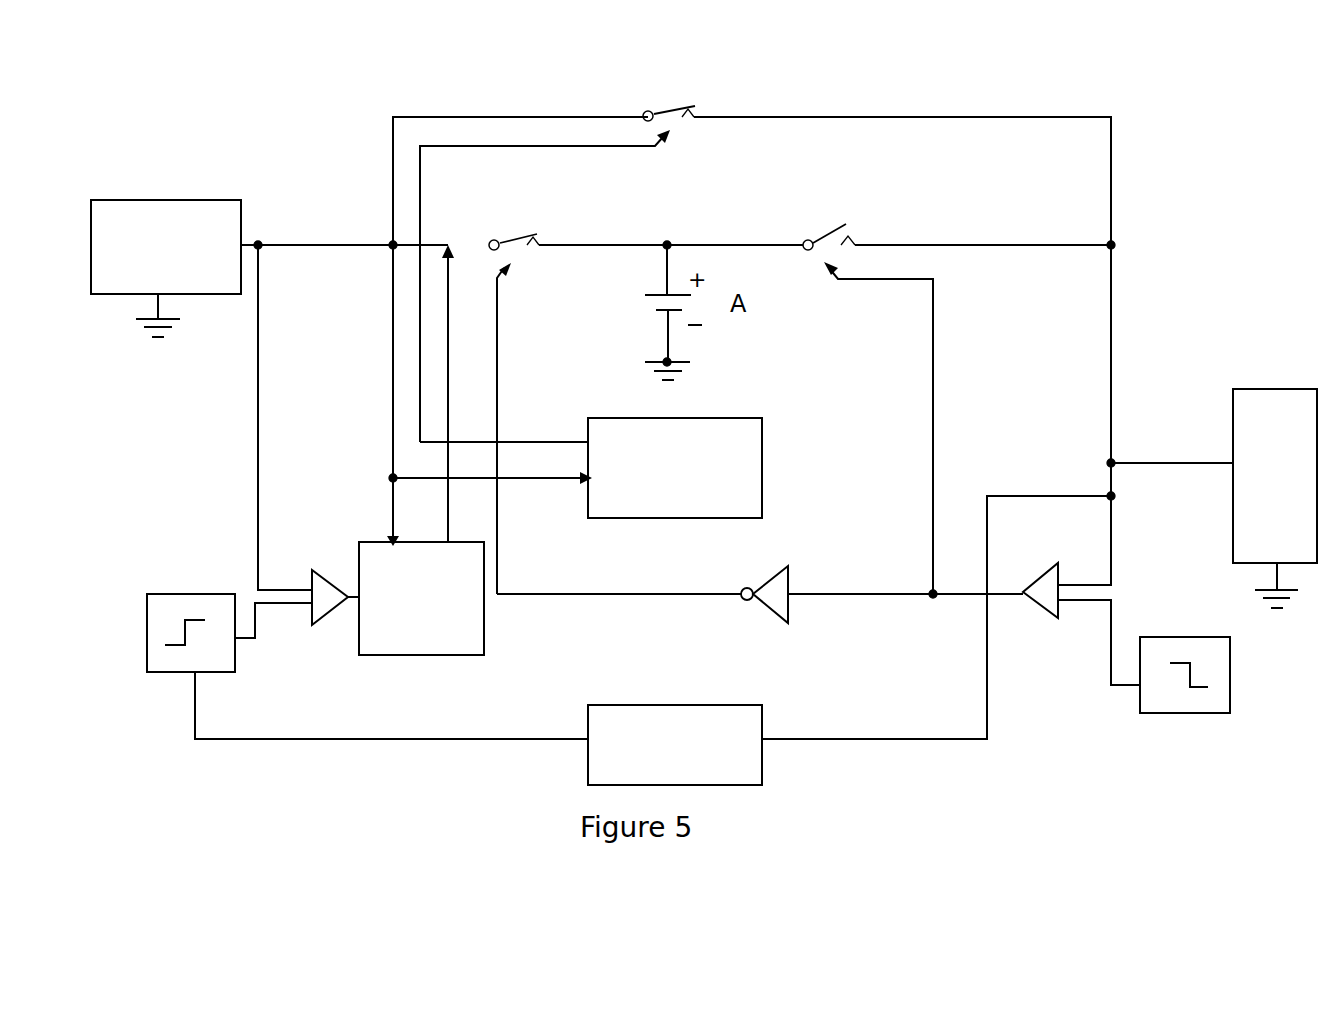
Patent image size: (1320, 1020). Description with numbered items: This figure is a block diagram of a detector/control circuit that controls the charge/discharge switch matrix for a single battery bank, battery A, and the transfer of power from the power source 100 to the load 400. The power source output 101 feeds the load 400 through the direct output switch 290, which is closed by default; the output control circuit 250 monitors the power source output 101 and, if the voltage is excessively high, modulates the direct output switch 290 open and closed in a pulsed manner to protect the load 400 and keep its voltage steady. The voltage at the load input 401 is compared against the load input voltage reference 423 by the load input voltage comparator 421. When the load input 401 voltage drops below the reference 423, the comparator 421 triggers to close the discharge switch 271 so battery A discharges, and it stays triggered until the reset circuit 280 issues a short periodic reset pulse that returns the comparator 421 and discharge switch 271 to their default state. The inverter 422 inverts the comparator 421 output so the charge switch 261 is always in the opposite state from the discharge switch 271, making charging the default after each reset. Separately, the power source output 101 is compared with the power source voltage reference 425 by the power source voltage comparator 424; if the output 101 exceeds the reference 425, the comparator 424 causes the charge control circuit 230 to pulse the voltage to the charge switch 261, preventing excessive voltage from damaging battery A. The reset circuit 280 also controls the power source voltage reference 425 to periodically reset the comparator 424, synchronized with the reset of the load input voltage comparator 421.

The power source 100 is at (168, 200).
The power source output 101 is at (320, 245).
The direct output switch 290 is at (765, 255).
The charge switch 261 is at (554, 398).
The discharge switch 271 is at (891, 398).
The output control circuit 250 is at (666, 418).
The charge control circuit 230 is at (402, 655).
The reset circuit 280 is at (663, 705).
The inverter 422 is at (760, 580).
The load input voltage comparator 421 is at (1035, 578).
The load input voltage reference 423 is at (1163, 637).
The power source voltage comparator 424 is at (335, 583).
The power source voltage reference 425 is at (186, 594).
The load 400 is at (1293, 389).
The load input 401 is at (1218, 463).